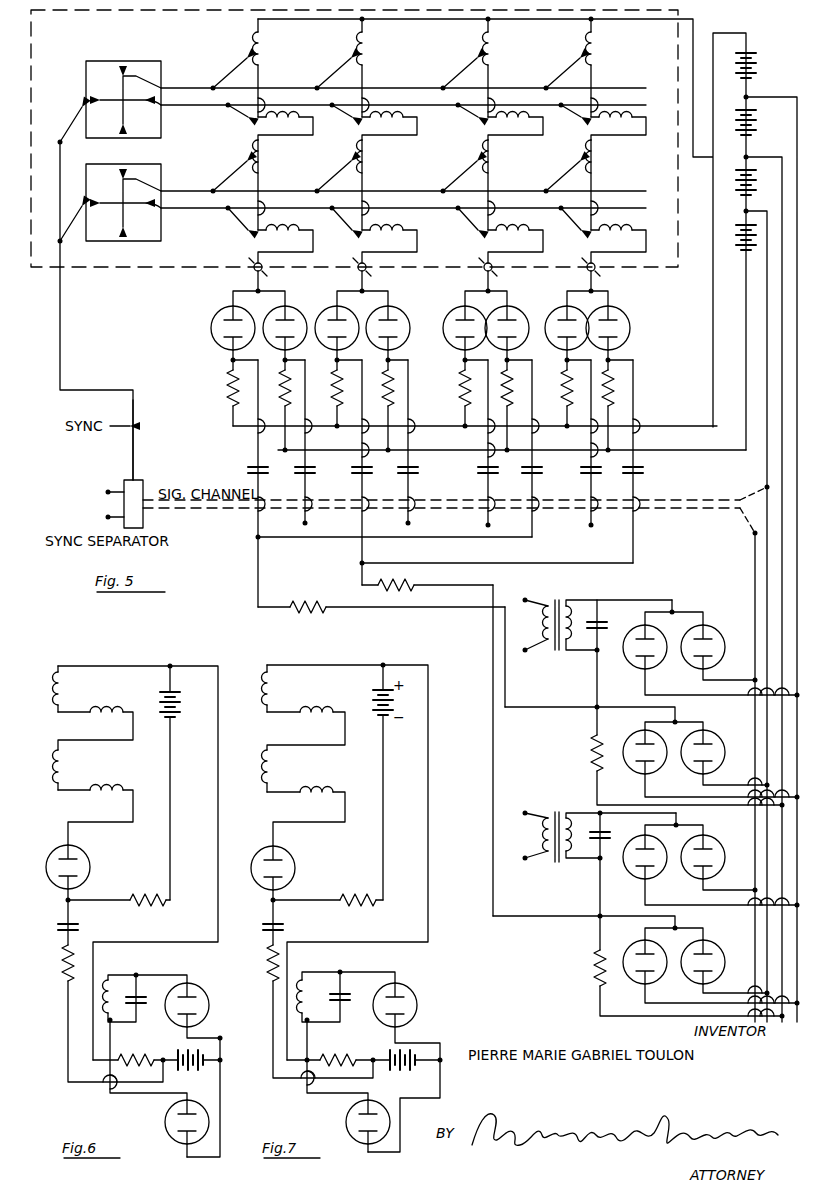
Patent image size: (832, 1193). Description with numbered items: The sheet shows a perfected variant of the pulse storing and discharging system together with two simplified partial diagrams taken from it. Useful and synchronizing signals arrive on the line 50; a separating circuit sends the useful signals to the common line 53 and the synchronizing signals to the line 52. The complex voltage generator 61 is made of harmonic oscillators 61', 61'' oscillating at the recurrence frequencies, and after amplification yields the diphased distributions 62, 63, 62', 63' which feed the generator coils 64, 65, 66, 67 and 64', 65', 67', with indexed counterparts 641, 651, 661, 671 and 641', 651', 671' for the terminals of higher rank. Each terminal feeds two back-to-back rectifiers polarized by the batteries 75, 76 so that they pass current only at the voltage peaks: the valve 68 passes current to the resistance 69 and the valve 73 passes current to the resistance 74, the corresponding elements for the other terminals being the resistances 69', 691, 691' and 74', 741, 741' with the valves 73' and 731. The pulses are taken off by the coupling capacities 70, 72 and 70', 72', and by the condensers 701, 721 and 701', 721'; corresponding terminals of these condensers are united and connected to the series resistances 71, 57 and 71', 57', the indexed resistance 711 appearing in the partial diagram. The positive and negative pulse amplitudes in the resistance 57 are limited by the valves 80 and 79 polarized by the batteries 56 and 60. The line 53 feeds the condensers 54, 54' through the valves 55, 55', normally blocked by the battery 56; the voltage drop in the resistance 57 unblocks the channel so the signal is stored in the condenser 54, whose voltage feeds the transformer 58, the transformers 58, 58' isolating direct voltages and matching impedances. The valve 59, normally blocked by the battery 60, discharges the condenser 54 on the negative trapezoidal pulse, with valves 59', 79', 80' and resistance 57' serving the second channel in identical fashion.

In FIG. 5, the line 50 is at (118, 504).
In FIG. 5, the line 52 is at (134, 470).
In FIG. 5, the line 53 is at (248, 525).
In FIG. 6, the line 53 is at (226, 1078).
In FIG. 5, the condenser 54 is at (608, 626).
In FIG. 6, the condenser 54 is at (141, 996).
In FIG. 7, the condenser 54 is at (346, 989).
In FIG. 5, the condenser 54' is at (579, 848).
In FIG. 5, the valve 55 is at (719, 650).
In FIG. 6, the valve 55 is at (201, 1018).
In FIG. 5, the valve 55' is at (719, 859).
In FIG. 5, the polarizing battery 56 is at (740, 192).
In FIG. 6, the polarizing battery 56 is at (188, 1076).
In FIG. 5, the resistance 57 is at (665, 771).
In FIG. 6, the resistance 57 is at (135, 1048).
In FIG. 7, the resistance 57 is at (330, 1048).
In FIG. 5, the resistance 57' is at (666, 984).
In FIG. 5, the transformer 58 is at (592, 614).
In FIG. 5, the transformer 58' is at (592, 825).
In FIG. 5, the valve 59 is at (703, 661).
In FIG. 7, the valve 59 is at (406, 1062).
In FIG. 5, the valve 59' is at (704, 871).
In FIG. 5, the battery 60 is at (758, 134).
In FIG. 7, the battery 60 is at (405, 1078).
In FIG. 5, the complex voltage generator 61 is at (354, 160).
In FIG. 5, the harmonic oscillator 61' is at (126, 107).
In FIG. 5, the harmonic oscillator 61'' is at (127, 210).
In FIG. 5, the diphased distribution 62 is at (403, 72).
In FIG. 5, the diphased distribution 62' is at (403, 177).
In FIG. 5, the diphased distribution 63 is at (403, 119).
In FIG. 5, the diphased distribution 63' is at (403, 221).
In FIG. 5, the complex voltage generator coil 64 is at (254, 68).
In FIG. 6, the complex voltage generator coil 64 is at (35, 689).
In FIG. 5, the complex voltage generator coil 64' is at (360, 68).
In FIG. 5, the complex voltage generator coil 641 is at (487, 68).
In FIG. 7, the complex voltage generator coil 641 is at (286, 688).
In FIG. 5, the complex voltage generator coil 641' is at (591, 68).
In FIG. 5, the complex voltage generator coil 65 is at (281, 119).
In FIG. 6, the complex voltage generator coil 65 is at (100, 716).
In FIG. 5, the complex voltage generator coil 65' is at (387, 119).
In FIG. 5, the complex voltage generator coil 651 is at (514, 119).
In FIG. 7, the complex voltage generator coil 651 is at (306, 729).
In FIG. 5, the complex voltage generator coil 651' is at (617, 121).
In FIG. 6, the complex voltage generator coil 66 is at (53, 774).
In FIG. 7, the complex voltage generator coil 661 is at (275, 770).
In FIG. 5, the complex voltage generator coil 67 is at (282, 232).
In FIG. 6, the complex voltage generator coil 67 is at (105, 803).
In FIG. 5, the complex voltage generator coil 67' is at (388, 232).
In FIG. 5, the complex voltage generator coil 671 is at (515, 232).
In FIG. 7, the complex voltage generator coil 671 is at (306, 817).
In FIG. 5, the complex voltage generator coil 671' is at (617, 232).
In FIG. 5, the valve 68 is at (212, 334).
In FIG. 6, the valve 68 is at (90, 862).
In FIG. 5, the resistance 69 is at (214, 392).
In FIG. 6, the resistance 69 is at (150, 912).
In FIG. 5, the resistance 69' is at (324, 393).
In FIG. 5, the resistance 691 is at (441, 395).
In FIG. 5, the resistance 691' is at (554, 395).
In FIG. 5, the coupling capacity 70 is at (242, 483).
In FIG. 6, the coupling capacity 70 is at (52, 922).
In FIG. 5, the coupling capacity 70' is at (370, 472).
In FIG. 5, the condenser 701 is at (501, 444).
In FIG. 7, the condenser 701 is at (288, 922).
In FIG. 5, the condenser 701' is at (604, 444).
In FIG. 5, the resistance 71 is at (381, 617).
In FIG. 6, the resistance 71 is at (98, 1013).
In FIG. 5, the resistance 71' is at (427, 579).
In FIG. 7, the resistance 711 is at (269, 974).
In FIG. 5, the capacity 72 is at (315, 443).
In FIG. 5, the capacity 72' is at (424, 443).
In FIG. 5, the condenser 721 is at (547, 448).
In FIG. 5, the condenser 721' is at (654, 461).
In FIG. 5, the valve 73 is at (290, 318).
In FIG. 5, the valve 73' is at (395, 318).
In FIG. 7, the valve 731 is at (296, 862).
In FIG. 5, the resistance 74 is at (303, 385).
In FIG. 5, the resistance 74' is at (407, 385).
In FIG. 7, the resistance 74' is at (363, 913).
In FIG. 5, the resistance 741 is at (530, 385).
In FIG. 5, the resistance 741' is at (638, 385).
In FIG. 5, the battery 75 is at (744, 252).
In FIG. 5, the battery 76 is at (758, 66).
In FIG. 6, the battery 76 is at (182, 705).
In FIG. 5, the valve 79 is at (698, 765).
In FIG. 7, the valve 79 is at (360, 1139).
In FIG. 5, the valve 79' is at (703, 965).
In FIG. 5, the valve 80 is at (725, 757).
In FIG. 6, the valve 80 is at (174, 1139).
In FIG. 5, the valve 80' is at (725, 961).